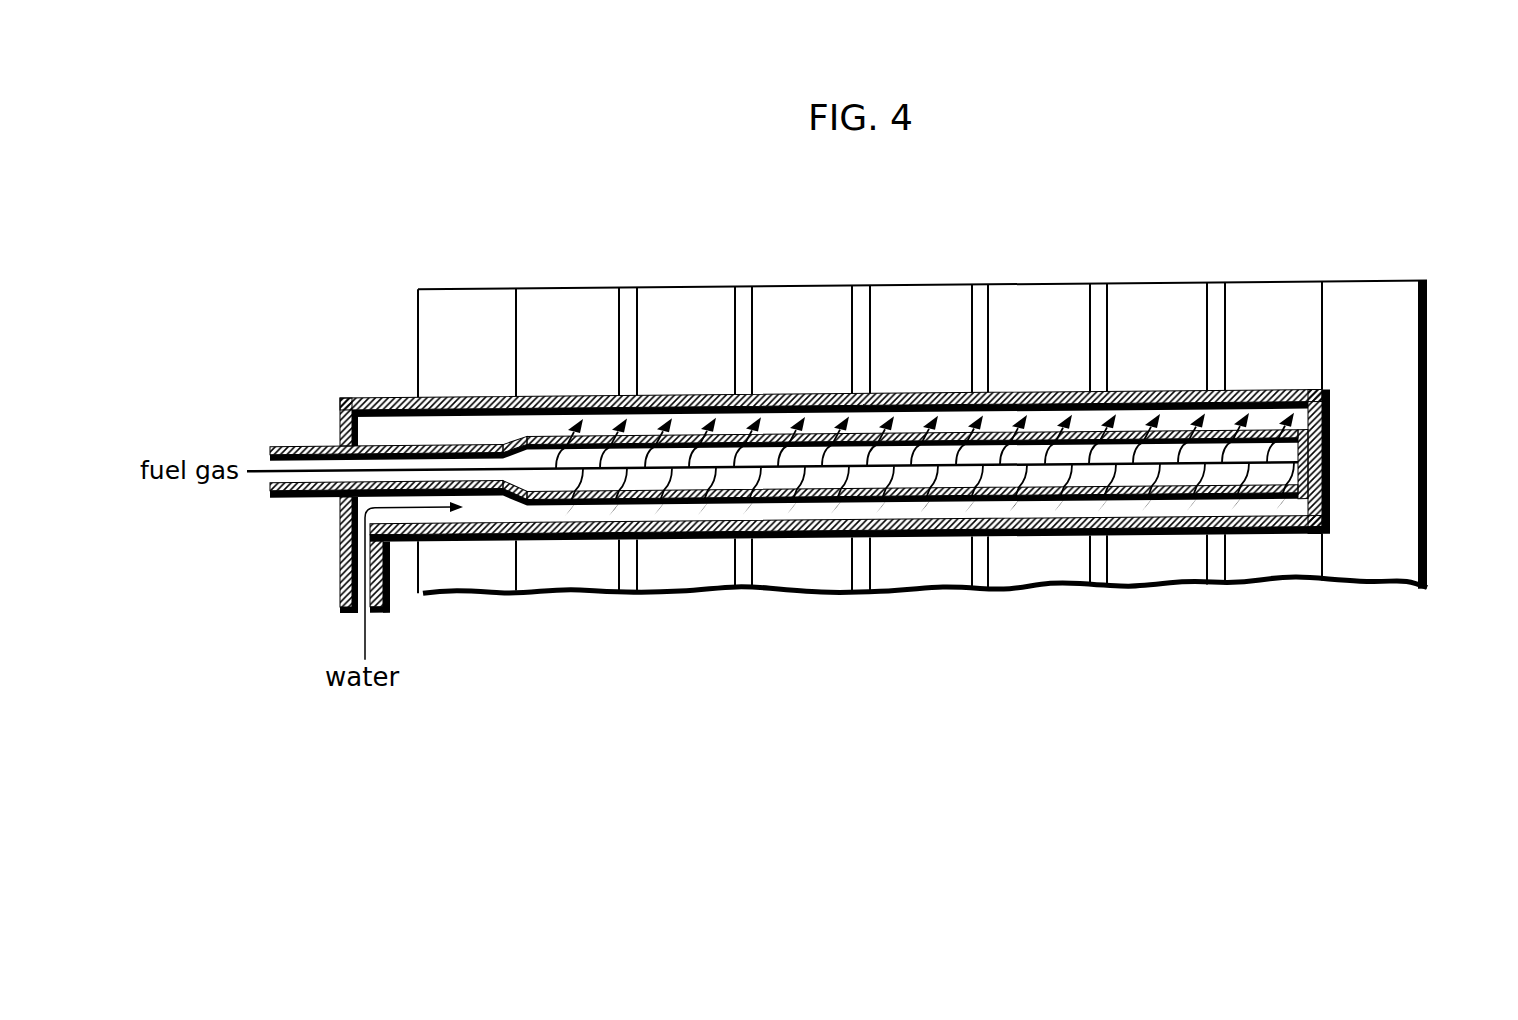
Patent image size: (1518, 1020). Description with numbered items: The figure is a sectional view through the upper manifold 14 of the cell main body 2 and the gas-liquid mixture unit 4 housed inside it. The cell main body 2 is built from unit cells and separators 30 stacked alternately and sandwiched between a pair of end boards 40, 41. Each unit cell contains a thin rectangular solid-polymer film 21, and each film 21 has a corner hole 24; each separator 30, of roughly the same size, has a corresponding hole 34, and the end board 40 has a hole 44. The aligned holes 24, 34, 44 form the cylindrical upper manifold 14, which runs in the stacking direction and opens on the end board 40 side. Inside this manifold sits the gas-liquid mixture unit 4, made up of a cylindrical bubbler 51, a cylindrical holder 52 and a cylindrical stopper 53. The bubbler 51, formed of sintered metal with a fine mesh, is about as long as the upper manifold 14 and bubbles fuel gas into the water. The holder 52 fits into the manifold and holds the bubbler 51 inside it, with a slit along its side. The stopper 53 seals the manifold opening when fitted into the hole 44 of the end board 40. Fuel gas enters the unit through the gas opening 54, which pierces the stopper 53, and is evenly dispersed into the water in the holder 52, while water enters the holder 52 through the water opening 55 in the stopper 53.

The cell main body 2 is at (1443, 292).
The gas-liquid mixture unit 4 is at (338, 403).
The upper manifold 14 is at (1033, 393).
The solid-polymer film 21 is at (1215, 290).
The hole 24 is at (627, 393).
The separator 30 is at (782, 302).
The hole 34 is at (543, 393).
The end board 40 is at (462, 288).
The end board 41 is at (1358, 283).
The hole 44 is at (448, 393).
The cylindrical bubbler 51 is at (807, 450).
The cylindrical holder 52 is at (1268, 535).
The cylindrical stopper 53 is at (393, 398).
The gas opening 54 is at (308, 497).
The water opening 55 is at (342, 583).